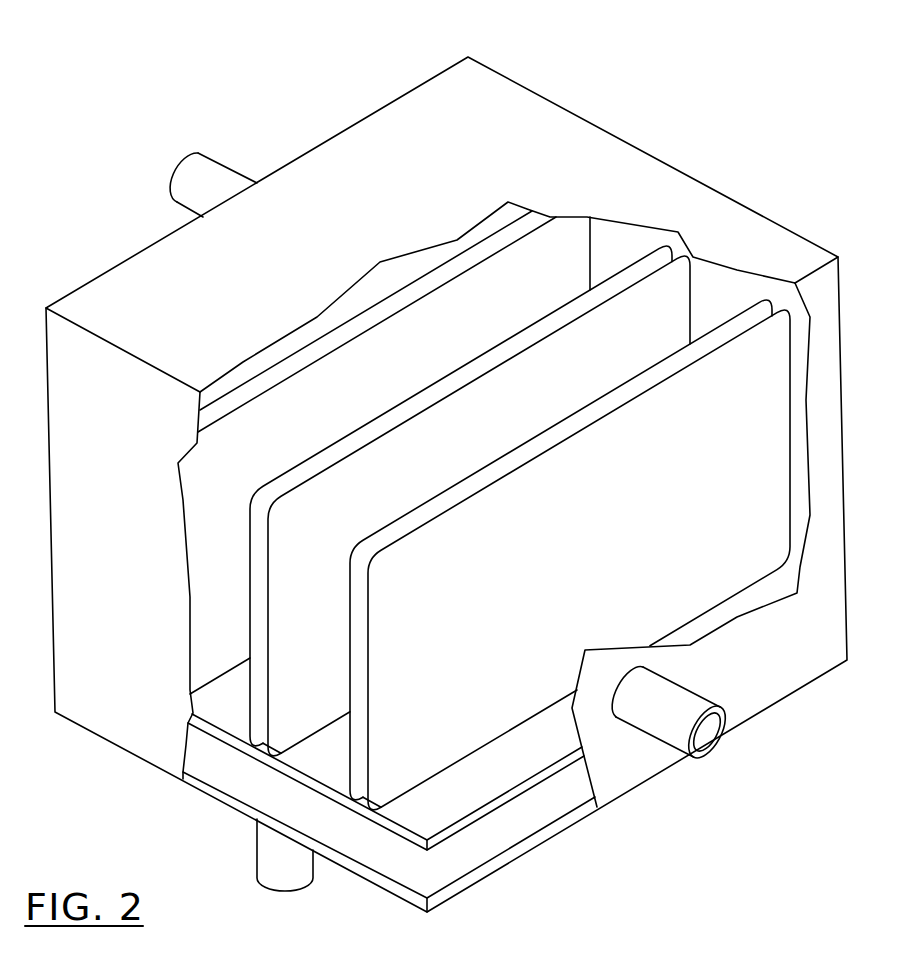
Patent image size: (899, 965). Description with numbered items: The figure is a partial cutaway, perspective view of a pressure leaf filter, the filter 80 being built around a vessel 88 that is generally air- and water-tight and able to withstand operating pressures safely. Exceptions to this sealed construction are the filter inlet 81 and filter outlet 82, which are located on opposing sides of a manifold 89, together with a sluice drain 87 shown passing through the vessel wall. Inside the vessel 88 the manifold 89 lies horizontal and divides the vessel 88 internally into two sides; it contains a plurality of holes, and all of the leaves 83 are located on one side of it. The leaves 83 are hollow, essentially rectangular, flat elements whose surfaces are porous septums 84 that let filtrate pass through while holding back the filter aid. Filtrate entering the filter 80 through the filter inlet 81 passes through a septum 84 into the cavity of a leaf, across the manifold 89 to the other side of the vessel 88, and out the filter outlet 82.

The filter 80 is at (712, 168).
The filter inlet 81 is at (180, 183).
The filter outlet 82 is at (270, 874).
The leaves 83 is at (257, 582).
The septums 84 is at (466, 622).
The sluice drain 87 is at (670, 727).
The vessel 88 is at (560, 107).
The manifold 89 is at (483, 818).